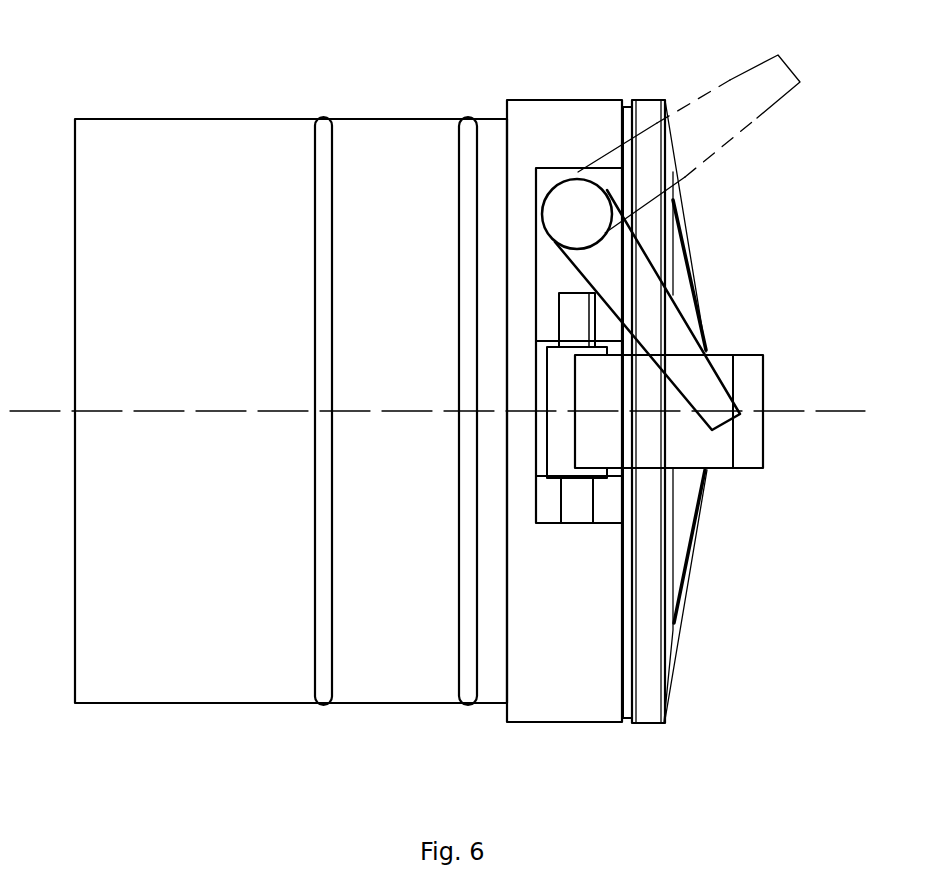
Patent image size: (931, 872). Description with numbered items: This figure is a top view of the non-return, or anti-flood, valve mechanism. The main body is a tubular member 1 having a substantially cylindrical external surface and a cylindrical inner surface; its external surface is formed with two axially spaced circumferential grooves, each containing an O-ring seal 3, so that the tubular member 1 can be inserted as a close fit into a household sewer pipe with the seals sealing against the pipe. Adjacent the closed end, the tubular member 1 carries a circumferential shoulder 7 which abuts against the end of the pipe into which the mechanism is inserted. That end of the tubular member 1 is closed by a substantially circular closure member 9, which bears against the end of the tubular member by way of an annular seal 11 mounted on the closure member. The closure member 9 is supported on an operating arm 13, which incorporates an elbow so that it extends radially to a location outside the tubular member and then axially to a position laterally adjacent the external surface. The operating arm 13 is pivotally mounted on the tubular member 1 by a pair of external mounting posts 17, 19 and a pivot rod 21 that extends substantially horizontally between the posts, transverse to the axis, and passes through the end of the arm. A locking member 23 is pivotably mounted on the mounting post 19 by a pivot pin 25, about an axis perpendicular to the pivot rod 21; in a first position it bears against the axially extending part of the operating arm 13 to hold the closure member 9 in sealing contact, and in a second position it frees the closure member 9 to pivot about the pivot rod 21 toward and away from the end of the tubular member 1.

The tubular member 1 is at (173, 119).
The O-ring seal 3 is at (318, 117).
The circumferential shoulder 7 is at (505, 104).
The closure member 9 is at (673, 668).
The annular seal 11 is at (628, 718).
The operating arm 13 is at (765, 387).
The mounting post 17 is at (550, 523).
The mounting post 19 is at (550, 167).
The pivot rod 21 is at (582, 523).
The locking member 23 is at (690, 377).
The pivot pin 25 is at (577, 214).